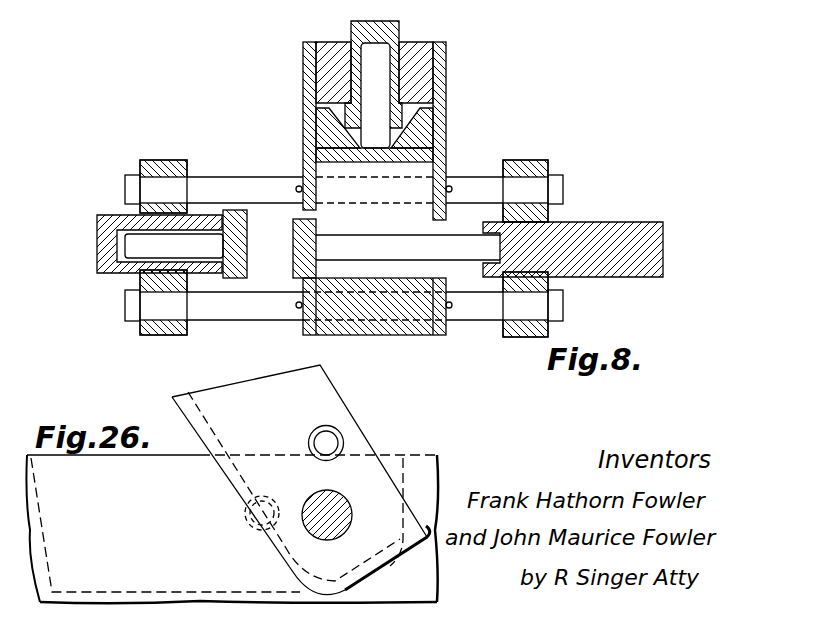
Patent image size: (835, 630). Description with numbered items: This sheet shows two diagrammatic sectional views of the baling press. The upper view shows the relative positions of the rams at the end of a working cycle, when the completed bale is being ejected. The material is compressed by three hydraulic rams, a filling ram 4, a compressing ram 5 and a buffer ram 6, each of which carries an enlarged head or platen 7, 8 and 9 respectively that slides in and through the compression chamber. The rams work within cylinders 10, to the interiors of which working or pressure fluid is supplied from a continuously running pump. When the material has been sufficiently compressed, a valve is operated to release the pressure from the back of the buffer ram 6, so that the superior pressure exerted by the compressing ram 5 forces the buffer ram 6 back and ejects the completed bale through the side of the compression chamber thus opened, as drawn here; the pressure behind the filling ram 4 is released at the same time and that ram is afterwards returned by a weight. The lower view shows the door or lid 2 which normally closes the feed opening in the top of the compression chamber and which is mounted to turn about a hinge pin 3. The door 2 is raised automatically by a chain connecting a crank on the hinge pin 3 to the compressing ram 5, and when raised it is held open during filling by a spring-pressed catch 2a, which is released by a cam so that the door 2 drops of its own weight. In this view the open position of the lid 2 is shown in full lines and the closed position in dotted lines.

In FIG. 8, the cylinder 10 is at (398, 26).
In FIG. 8, the filling ram 4 is at (380, 67).
In FIG. 8, the head or platen 7 is at (407, 155).
In FIG. 8, the buffer ram 6 is at (193, 238).
In FIG. 8, the head or platen 9 is at (242, 248).
In FIG. 8, the head or platen 8 is at (317, 227).
In FIG. 8, the compressing ram 5 is at (455, 241).
In FIG. 26, the door 2 is at (305, 392).
In FIG. 26, the catch 2a is at (329, 443).
In FIG. 26, the hinge pin 3 is at (343, 520).